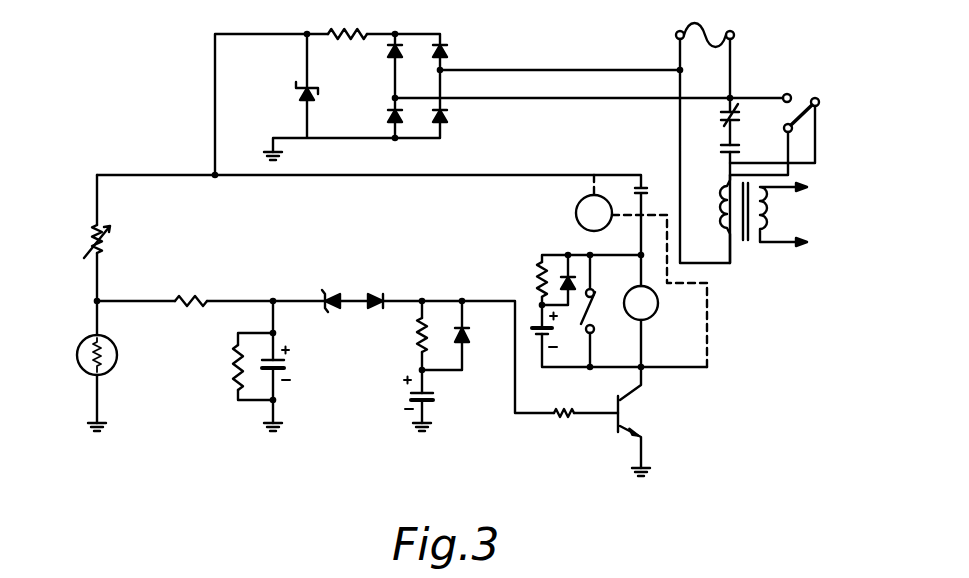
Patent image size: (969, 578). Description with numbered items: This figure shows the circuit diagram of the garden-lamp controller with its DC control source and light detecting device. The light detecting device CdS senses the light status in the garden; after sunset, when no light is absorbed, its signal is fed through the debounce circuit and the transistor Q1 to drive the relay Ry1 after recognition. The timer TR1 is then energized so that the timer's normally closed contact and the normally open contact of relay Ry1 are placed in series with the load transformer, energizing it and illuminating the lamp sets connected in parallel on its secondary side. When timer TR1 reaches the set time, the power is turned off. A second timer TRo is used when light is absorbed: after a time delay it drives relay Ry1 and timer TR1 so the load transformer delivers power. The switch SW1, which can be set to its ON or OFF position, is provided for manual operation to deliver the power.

The light detecting device CdS is at (121, 355).
The timer TRo is at (577, 197).
The timer TR1 is at (658, 300).
The relay RY1 Ry1 is at (617, 283).
The transistor Q1 is at (645, 436).
The manual switch SW1 is at (816, 80).
The ON position ON is at (784, 81).
The OFF position OFF is at (817, 118).